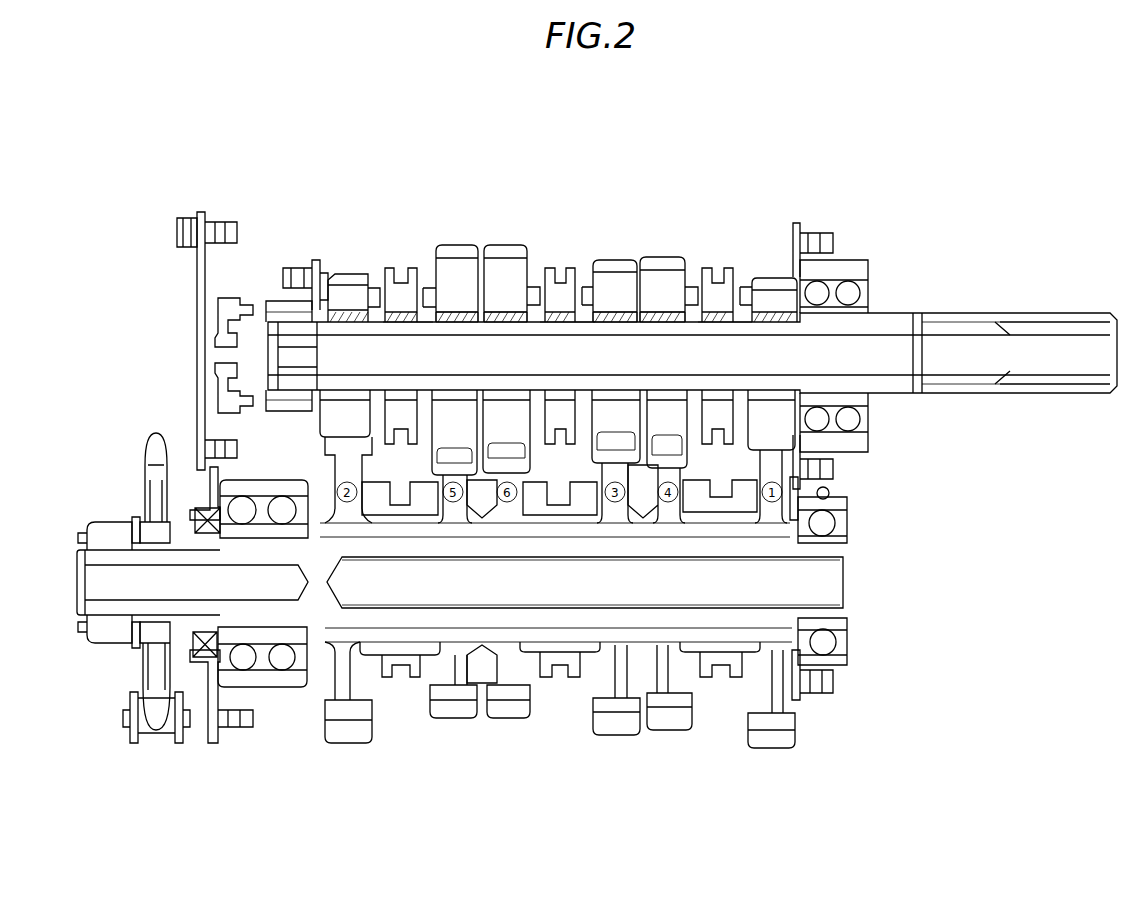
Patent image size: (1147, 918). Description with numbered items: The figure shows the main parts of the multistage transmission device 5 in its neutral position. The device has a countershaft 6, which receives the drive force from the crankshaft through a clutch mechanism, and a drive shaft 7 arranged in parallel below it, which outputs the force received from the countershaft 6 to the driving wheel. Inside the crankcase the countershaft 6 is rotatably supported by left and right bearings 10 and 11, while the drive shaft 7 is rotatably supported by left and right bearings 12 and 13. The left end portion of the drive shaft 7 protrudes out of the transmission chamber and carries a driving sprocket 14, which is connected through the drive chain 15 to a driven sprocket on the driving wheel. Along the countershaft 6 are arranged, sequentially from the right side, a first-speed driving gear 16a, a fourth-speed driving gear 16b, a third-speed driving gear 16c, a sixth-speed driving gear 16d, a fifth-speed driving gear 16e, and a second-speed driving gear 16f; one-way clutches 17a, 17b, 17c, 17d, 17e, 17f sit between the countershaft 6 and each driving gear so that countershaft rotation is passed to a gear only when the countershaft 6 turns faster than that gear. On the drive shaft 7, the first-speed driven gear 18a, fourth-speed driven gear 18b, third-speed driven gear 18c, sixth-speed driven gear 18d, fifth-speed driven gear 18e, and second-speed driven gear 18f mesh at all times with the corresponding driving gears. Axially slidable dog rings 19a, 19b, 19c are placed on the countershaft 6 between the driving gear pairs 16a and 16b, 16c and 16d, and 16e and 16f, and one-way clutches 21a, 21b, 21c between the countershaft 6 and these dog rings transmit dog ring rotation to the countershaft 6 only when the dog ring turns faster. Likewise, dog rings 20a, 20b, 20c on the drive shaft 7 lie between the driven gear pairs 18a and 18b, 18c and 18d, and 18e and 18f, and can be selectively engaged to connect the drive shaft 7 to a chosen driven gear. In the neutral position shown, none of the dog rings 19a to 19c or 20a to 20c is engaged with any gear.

The multistage transmission device 5 is at (923, 245).
The countershaft 6 is at (972, 320).
The drive shaft 7 is at (775, 558).
The bearing 10 is at (850, 266).
The bearing 11 is at (275, 300).
The bearing 12 is at (845, 660).
The bearing 13 is at (266, 688).
The driving sprocket 14 is at (150, 668).
The drive chain 15 is at (130, 738).
The 1-speed driving gear 16a is at (768, 280).
The 4-speed driving gear 16b is at (660, 259).
The 3-speed driving gear 16c is at (606, 262).
The 6-speed driving gear 16d is at (497, 246).
The 5-speed driving gear 16e is at (452, 246).
The 2-speed driving gear 16f is at (350, 275).
The one-way clutch 17a is at (790, 318).
The one-way clutch 17b is at (672, 318).
The one-way clutch 17c is at (617, 318).
The one-way clutch 17d is at (503, 317).
The one-way clutch 17e is at (455, 318).
The one-way clutch 17f is at (333, 315).
The 1-speed driven gear 18a is at (772, 750).
The 4-speed driven gear 18b is at (668, 732).
The 3-speed driven gear 18c is at (618, 737).
The 6-speed driven gear 18d is at (508, 720).
The 5-speed driven gear 18e is at (455, 720).
The 2-speed driven gear 18f is at (345, 745).
The dog ring 19a is at (718, 270).
The dog ring 19b is at (560, 270).
The dog ring 19c is at (400, 278).
The dog ring 20a is at (720, 678).
The dog ring 20b is at (561, 678).
The dog ring 20c is at (401, 678).
The one-way clutch 21a is at (722, 323).
The one-way clutch 21b is at (565, 323).
The one-way clutch 21c is at (402, 323).